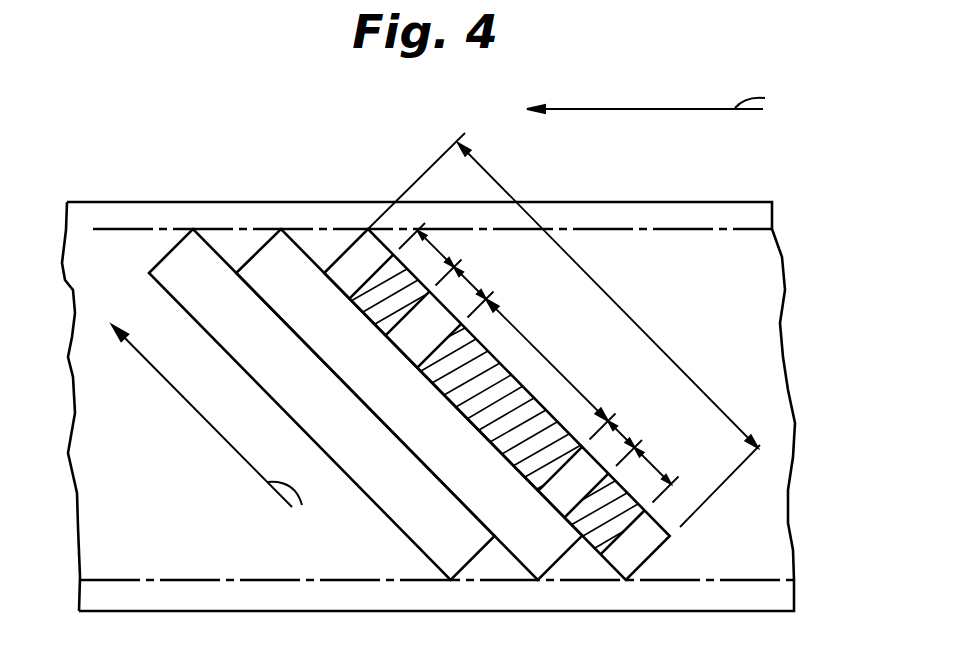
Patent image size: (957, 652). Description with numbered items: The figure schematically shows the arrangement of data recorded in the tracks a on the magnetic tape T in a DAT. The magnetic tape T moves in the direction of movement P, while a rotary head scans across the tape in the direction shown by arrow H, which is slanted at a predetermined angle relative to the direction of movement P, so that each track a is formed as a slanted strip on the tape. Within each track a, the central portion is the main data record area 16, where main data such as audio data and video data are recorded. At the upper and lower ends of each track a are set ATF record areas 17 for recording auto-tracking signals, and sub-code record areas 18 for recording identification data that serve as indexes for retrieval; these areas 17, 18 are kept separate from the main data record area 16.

The main data record area 16 is at (547, 358).
The ATF record area 17 is at (458, 268).
The sub-code record area 18 is at (422, 228).
The track a is at (353, 257).
The magnetic tape T is at (653, 212).
The direction of movement of the tape P is at (659, 113).
The direction of head scanning H is at (214, 435).